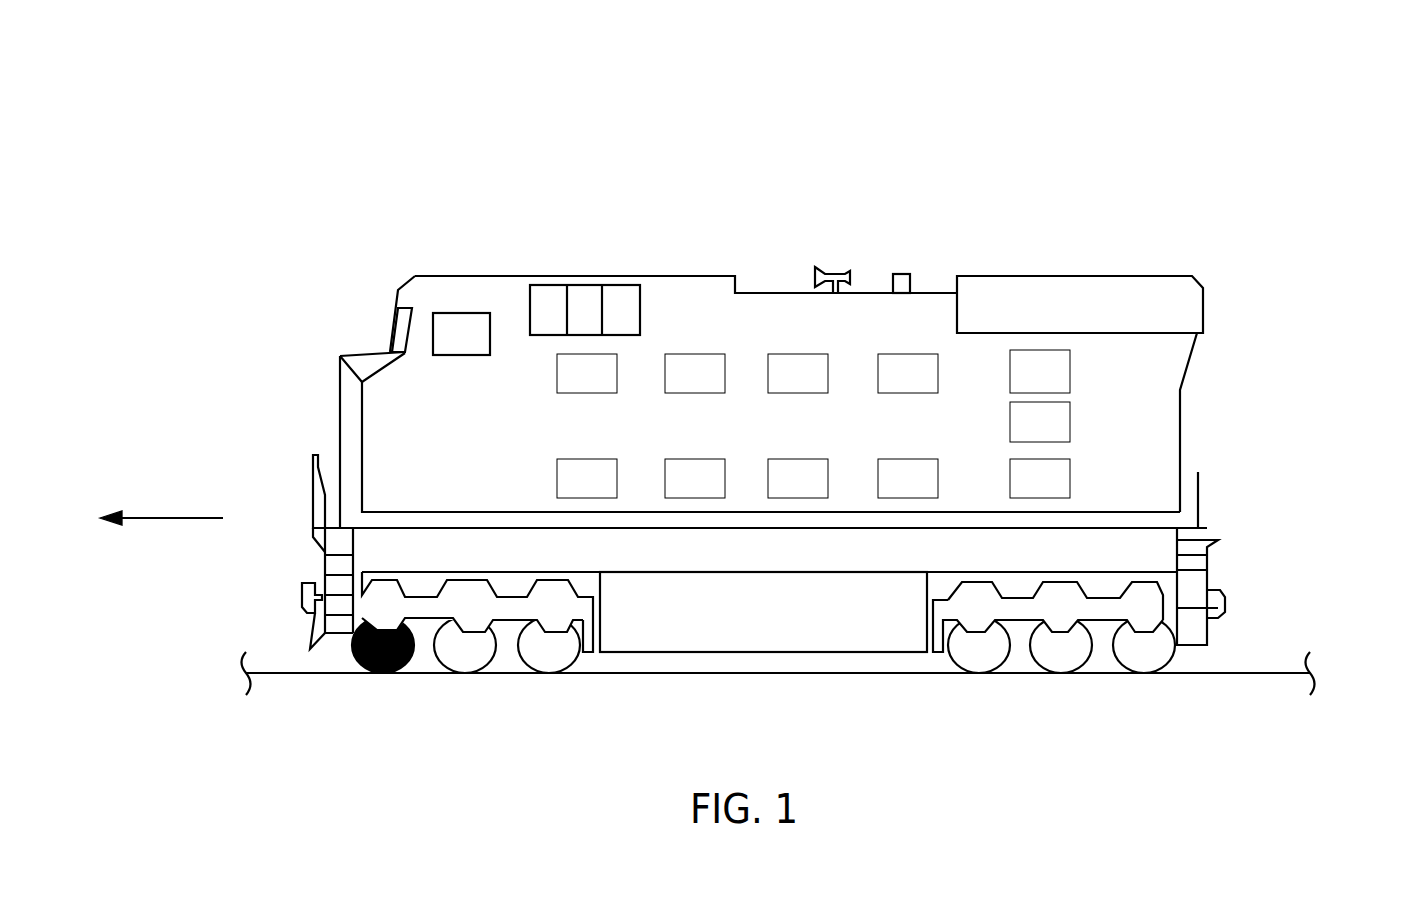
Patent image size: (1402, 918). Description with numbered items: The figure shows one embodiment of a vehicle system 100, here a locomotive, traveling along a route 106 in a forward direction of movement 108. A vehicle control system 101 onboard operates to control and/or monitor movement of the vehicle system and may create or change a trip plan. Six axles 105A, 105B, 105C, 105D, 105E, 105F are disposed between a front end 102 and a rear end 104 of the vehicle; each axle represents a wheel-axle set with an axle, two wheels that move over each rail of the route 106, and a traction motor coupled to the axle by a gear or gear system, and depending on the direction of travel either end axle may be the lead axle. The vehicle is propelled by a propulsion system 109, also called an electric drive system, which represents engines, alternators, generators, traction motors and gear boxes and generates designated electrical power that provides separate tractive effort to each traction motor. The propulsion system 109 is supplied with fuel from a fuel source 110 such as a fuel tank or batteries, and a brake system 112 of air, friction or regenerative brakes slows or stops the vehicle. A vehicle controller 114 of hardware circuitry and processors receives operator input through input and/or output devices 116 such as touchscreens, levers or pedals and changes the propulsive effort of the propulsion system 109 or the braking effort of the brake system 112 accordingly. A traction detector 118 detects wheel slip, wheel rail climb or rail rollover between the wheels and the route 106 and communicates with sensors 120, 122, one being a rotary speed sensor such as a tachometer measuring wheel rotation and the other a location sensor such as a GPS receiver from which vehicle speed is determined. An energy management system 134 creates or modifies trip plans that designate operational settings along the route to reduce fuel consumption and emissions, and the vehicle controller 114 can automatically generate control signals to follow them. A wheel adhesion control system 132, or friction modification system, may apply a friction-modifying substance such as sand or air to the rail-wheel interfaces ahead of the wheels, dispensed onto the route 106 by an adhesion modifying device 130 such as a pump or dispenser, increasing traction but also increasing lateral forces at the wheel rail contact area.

The vehicle system 100 is at (1248, 118).
The vehicle control system 101 is at (1243, 475).
The front end 102 is at (306, 456).
The rear end 104 is at (1210, 275).
The axle 105A is at (368, 673).
The axle 105B is at (446, 672).
The axle 105C is at (530, 672).
The axle 105D is at (956, 672).
The axle 105E is at (1040, 672).
The axle 105F is at (1121, 672).
The route 106 is at (1273, 678).
The forward direction of movement 108 is at (166, 516).
The propulsion system 109 is at (563, 385).
The fuel source 110 is at (563, 490).
The brake system 112 is at (671, 490).
The vehicle controller 114 is at (671, 385).
The input and/or output devices 116 is at (774, 385).
The traction detector 118 is at (774, 490).
The sensor 120 is at (884, 385).
The sensor 122 is at (884, 490).
The adhesion modifying device 130 is at (1016, 383).
The wheel adhesion control system 132 is at (1016, 433).
The energy management system 134 is at (1016, 490).